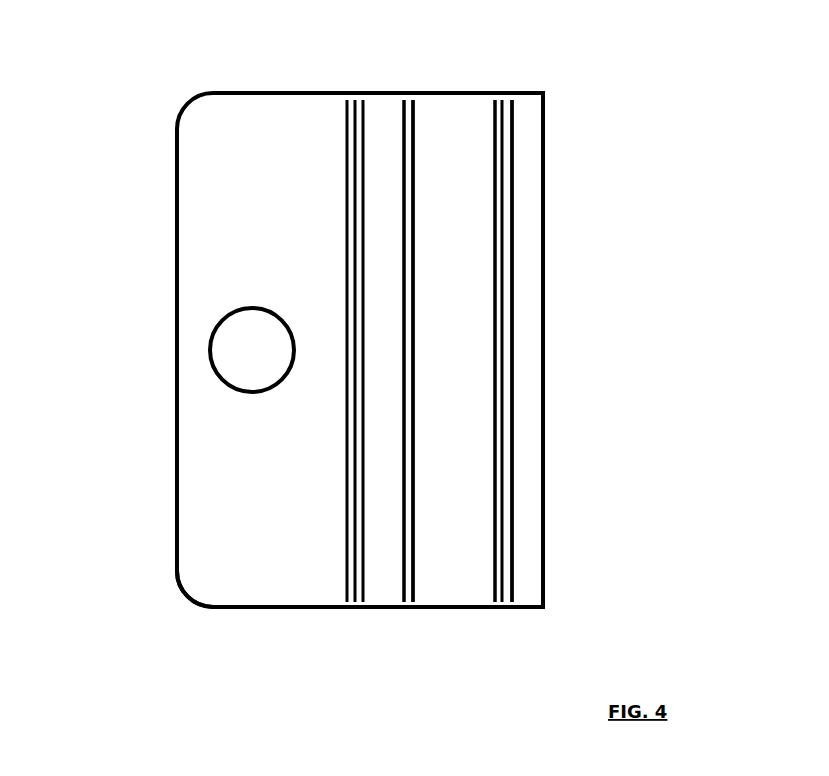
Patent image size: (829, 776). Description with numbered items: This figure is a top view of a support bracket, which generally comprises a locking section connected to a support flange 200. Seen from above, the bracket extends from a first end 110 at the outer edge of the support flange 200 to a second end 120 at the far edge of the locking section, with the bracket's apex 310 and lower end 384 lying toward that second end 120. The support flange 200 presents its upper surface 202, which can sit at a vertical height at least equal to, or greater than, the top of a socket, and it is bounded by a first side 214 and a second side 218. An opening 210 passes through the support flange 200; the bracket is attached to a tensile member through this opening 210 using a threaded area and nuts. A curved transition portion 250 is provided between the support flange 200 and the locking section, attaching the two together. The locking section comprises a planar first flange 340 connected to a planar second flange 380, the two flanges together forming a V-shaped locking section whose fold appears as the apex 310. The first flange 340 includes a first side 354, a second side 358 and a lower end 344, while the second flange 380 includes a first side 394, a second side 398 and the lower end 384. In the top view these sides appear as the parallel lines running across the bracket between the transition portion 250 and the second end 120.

The first end 110 is at (177, 266).
The second end 120 is at (545, 248).
The support flange 200 is at (248, 560).
The upper surface 202 is at (260, 213).
The opening 210 is at (252, 350).
The first side 214 is at (252, 95).
The second side 218 is at (270, 608).
The transition portion 250 is at (377, 91).
The apex 310 is at (497, 403).
The first flange 340 is at (450, 143).
The lower end 344 is at (415, 437).
The first side 354 is at (435, 92).
The second side 358 is at (462, 608).
The second flange 380 is at (535, 572).
The lower end 384 is at (545, 332).
The first side 394 is at (528, 92).
The second side 398 is at (533, 608).